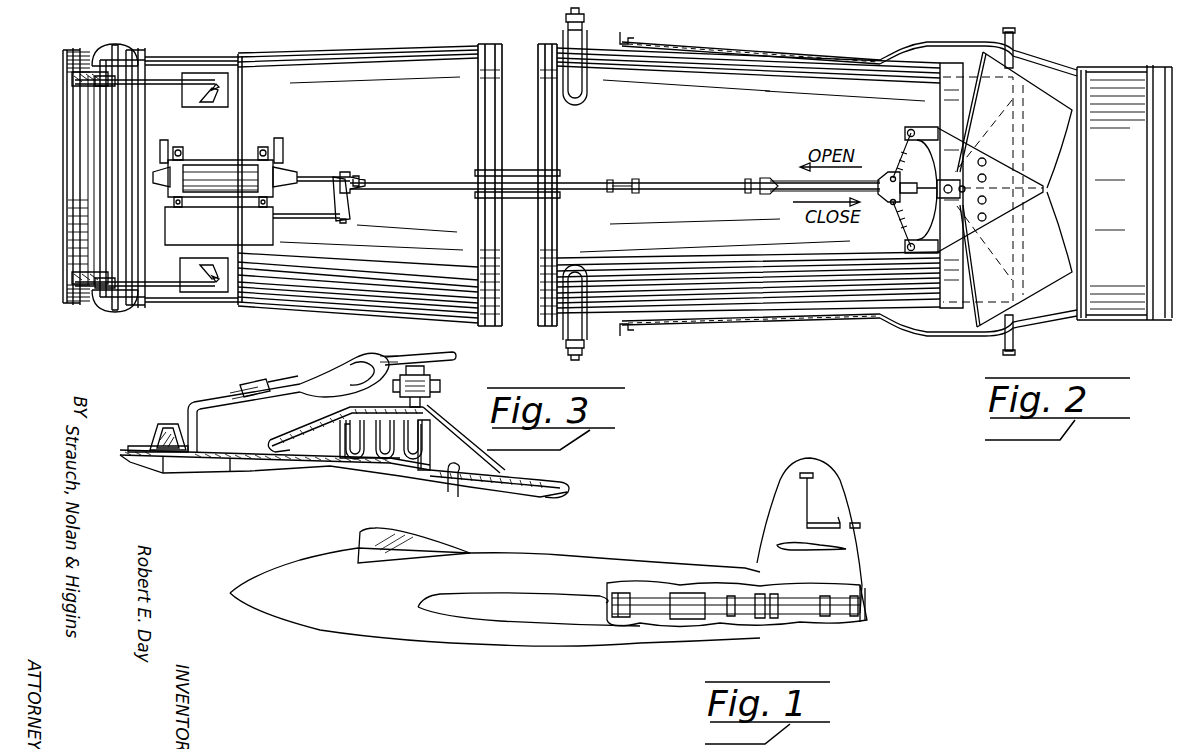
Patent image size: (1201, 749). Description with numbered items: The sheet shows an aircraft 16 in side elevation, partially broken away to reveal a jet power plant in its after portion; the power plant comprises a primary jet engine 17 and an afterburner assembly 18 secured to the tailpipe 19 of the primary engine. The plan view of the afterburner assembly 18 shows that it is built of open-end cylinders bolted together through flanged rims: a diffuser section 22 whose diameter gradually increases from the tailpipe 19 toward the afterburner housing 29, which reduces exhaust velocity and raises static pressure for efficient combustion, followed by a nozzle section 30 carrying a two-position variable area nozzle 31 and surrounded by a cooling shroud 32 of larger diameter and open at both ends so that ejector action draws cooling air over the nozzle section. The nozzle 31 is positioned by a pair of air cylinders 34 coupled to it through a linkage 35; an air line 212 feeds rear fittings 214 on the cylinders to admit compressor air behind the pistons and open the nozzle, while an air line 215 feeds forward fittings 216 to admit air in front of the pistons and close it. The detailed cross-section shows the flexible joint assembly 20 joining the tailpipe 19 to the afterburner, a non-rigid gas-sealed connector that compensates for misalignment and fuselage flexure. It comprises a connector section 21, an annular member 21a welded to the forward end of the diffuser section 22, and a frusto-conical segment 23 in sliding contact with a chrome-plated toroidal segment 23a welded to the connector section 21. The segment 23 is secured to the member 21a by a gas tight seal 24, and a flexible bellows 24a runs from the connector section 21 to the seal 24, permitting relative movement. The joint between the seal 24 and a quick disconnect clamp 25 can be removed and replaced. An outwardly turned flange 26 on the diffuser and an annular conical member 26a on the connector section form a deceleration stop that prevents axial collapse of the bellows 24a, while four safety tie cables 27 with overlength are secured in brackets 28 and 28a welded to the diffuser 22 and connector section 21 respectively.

In FIG. 1, the aircraft 16 is at (556, 550).
In FIG. 1, the primary jet engine 17 is at (700, 588).
In FIG. 2, the afterburner assembly 18 is at (414, 44).
In FIG. 1, the afterburner assembly 18 is at (847, 617).
In FIG. 3, the tailpipe 19 is at (143, 458).
In FIG. 1, the tailpipe 19 is at (725, 612).
In FIG. 2, the flexible joint assembly 20 is at (104, 177).
In FIG. 3, the flexible joint assembly 20 is at (317, 465).
In FIG. 2, the connector section 21 is at (70, 229).
In FIG. 3, the connector section 21 is at (350, 475).
In FIG. 3, the annular member 21a is at (488, 454).
In FIG. 2, the diffuser section 22 is at (268, 56).
In FIG. 3, the diffuser section 22 is at (560, 478).
In FIG. 3, the frusto-conical segment 23 is at (335, 411).
In FIG. 3, the toroidal segment 23a is at (292, 452).
In FIG. 3, the gas tight seal 24 is at (432, 386).
In FIG. 3, the flexible bellows 24a is at (386, 462).
In FIG. 3, the quick disconnect clamp 25 is at (165, 425).
In FIG. 3, the outwardly turned flange 26 is at (458, 490).
In FIG. 3, the annular conical member 26a is at (434, 476).
In FIG. 2, the safety tie cables 27 is at (163, 76).
In FIG. 3, the safety tie cables 27 is at (448, 352).
In FIG. 2, the bracket 28 is at (230, 95).
In FIG. 2, the bracket 28a is at (93, 47).
In FIG. 3, the bracket 28a is at (216, 397).
In FIG. 2, the afterburner housing 29 is at (500, 46).
In FIG. 2, the nozzle section 30 is at (720, 62).
In FIG. 2, the variable area nozzle 31 is at (1062, 212).
In FIG. 2, the cooling shroud 32 is at (836, 52).
In FIG. 2, the air cylinders 34 is at (203, 165).
In FIG. 2, the linkage 35 is at (672, 179).
In FIG. 2, the air line 212 is at (282, 150).
In FIG. 2, the rear fittings 214 is at (288, 172).
In FIG. 2, the air line 215 is at (178, 146).
In FIG. 2, the forward fittings 216 is at (160, 166).